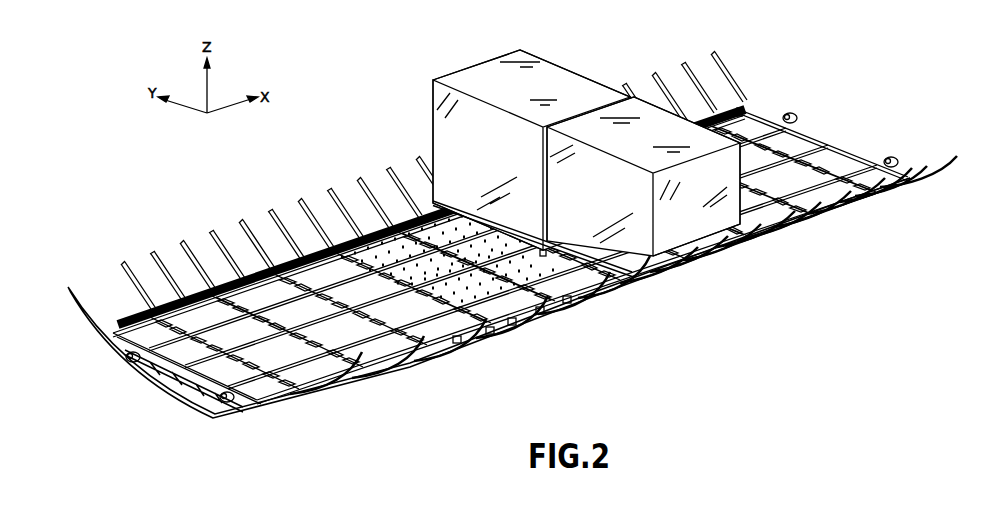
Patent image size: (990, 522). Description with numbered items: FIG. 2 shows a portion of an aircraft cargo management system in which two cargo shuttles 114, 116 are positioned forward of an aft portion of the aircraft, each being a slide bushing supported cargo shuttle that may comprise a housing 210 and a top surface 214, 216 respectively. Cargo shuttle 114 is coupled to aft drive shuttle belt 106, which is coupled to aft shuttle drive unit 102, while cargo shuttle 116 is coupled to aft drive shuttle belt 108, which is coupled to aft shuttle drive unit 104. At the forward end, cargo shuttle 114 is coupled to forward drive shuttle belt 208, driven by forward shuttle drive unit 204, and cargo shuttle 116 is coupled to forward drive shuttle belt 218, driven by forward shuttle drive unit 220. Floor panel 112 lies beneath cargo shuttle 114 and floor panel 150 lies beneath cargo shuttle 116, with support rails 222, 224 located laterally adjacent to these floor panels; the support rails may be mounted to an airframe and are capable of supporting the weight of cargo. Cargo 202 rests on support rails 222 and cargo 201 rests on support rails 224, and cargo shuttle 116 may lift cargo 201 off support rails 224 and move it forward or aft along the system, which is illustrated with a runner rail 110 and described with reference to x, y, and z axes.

The aft shuttle drive unit 102 is at (226, 404).
The aft shuttle drive unit 104 is at (128, 362).
The aft drive shuttle belt 106 is at (417, 358).
The aft drive shuttle belt 108 is at (283, 300).
The runner rail 110 is at (620, 293).
The floor panel 112 is at (357, 362).
The cargo shuttle 114 is at (501, 322).
The cargo shuttle 116 is at (402, 263).
The floor panel 150 is at (250, 262).
The cargo 201 is at (481, 86).
The cargo 202 is at (647, 129).
The forward shuttle drive unit 204 is at (895, 161).
The forward drive shuttle belt 208 is at (773, 228).
The housing 210 is at (544, 256).
The top surface 214 is at (498, 320).
The top surface 216 is at (353, 317).
The forward drive shuttle belt 218 is at (738, 109).
The forward shuttle drive unit 220 is at (791, 116).
The support rails 222 is at (567, 304).
The support rails 224 is at (350, 307).